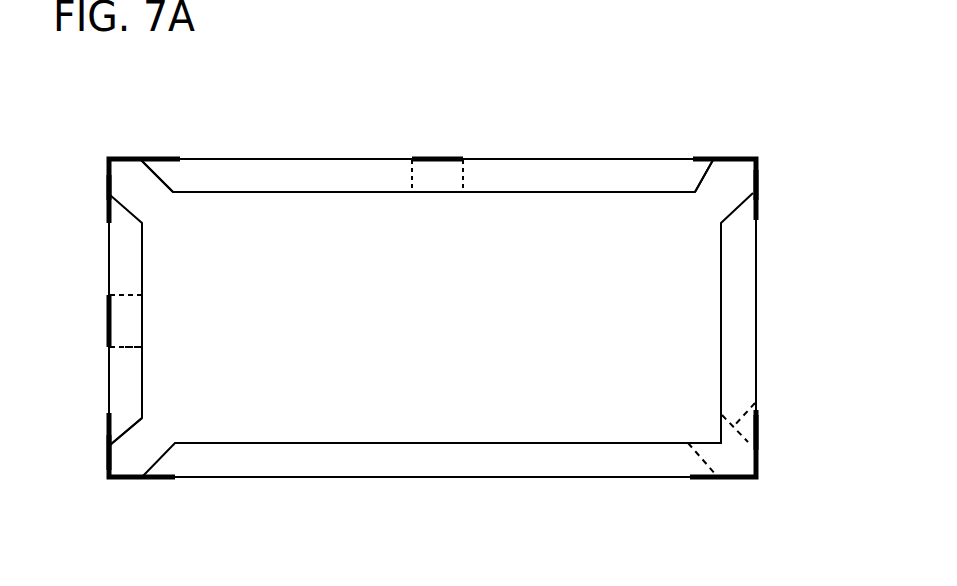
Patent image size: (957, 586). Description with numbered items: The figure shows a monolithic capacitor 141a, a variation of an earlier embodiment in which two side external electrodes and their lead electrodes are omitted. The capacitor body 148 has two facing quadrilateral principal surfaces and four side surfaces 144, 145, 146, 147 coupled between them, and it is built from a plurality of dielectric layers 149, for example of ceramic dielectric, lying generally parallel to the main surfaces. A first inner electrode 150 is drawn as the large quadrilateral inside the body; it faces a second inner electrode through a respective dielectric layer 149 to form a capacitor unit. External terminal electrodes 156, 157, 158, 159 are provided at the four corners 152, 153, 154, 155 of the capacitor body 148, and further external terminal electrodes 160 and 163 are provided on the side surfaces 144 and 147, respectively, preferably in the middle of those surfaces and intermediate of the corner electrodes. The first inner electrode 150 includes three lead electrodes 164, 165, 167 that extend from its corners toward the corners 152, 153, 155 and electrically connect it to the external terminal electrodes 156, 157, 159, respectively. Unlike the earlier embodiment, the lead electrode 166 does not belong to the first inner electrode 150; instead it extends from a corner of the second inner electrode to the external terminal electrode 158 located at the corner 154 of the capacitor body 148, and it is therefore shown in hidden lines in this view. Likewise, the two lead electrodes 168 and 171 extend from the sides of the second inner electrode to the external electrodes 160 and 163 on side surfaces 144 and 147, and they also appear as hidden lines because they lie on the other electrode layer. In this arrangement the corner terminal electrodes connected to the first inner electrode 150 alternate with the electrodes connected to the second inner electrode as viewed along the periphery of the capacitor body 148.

The monolithic capacitor 141a is at (105, 138).
The side surface 144 is at (312, 158).
The side surface 145 is at (757, 312).
The side surface 146 is at (320, 478).
The side surface 147 is at (108, 253).
The capacitor body 148 is at (592, 156).
The dielectric layer 149 is at (513, 170).
The first inner electrode 150 is at (729, 251).
The corner 152 is at (117, 166).
The corner 153 is at (737, 155).
The corner 154 is at (745, 478).
The corner 155 is at (116, 477).
The external terminal electrode 156 is at (108, 188).
The external terminal electrode 157 is at (761, 180).
The external terminal electrode 158 is at (759, 430).
The external terminal electrode 159 is at (107, 453).
The external terminal electrode 160 is at (437, 155).
The external terminal electrode 163 is at (107, 313).
The lead electrode 164 is at (152, 182).
The lead electrode 165 is at (710, 178).
The lead electrode 166 is at (755, 404).
The lead electrode 167 is at (133, 428).
The lead electrode 168 is at (385, 141).
The lead electrode 171 is at (127, 348).